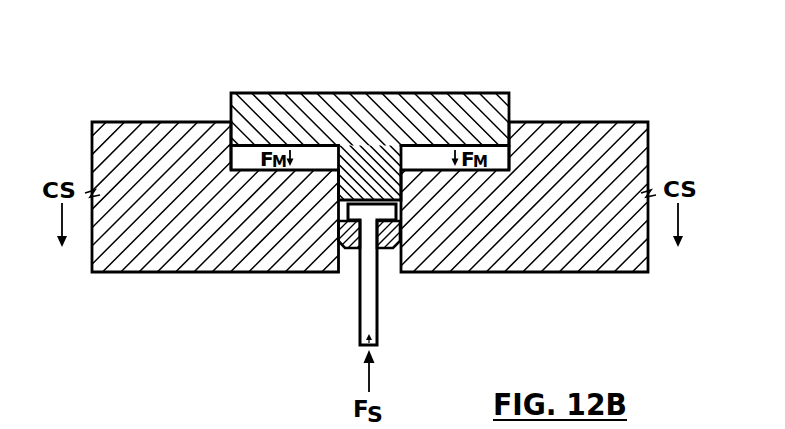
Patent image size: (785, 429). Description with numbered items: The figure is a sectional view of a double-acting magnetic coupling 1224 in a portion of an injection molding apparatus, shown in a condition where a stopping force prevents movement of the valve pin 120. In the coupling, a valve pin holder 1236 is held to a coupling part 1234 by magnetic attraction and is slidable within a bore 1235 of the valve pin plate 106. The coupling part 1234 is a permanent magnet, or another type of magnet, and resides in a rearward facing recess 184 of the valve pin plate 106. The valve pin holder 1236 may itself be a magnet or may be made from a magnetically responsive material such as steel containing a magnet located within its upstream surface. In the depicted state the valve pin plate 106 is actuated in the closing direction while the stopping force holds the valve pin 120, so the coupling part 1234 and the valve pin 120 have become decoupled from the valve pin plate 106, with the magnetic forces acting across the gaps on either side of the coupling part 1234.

The valve pin plate 106 is at (622, 160).
The double-acting magnetic coupling 1224 is at (247, 63).
The coupling part 1234 is at (470, 121).
The rearward facing recess 184 is at (231, 161).
The valve pin holder 1236 is at (351, 186).
The bore 1235 is at (400, 250).
The valve pin 120 is at (377, 324).